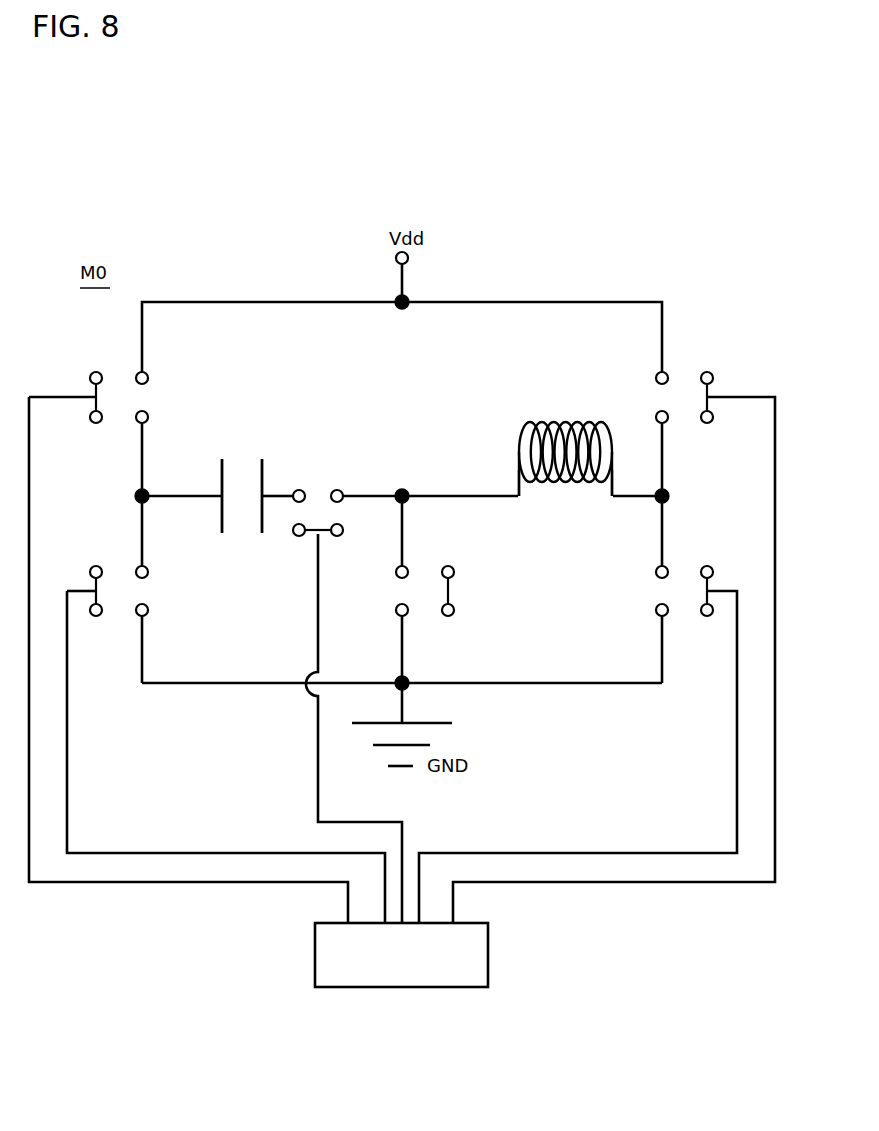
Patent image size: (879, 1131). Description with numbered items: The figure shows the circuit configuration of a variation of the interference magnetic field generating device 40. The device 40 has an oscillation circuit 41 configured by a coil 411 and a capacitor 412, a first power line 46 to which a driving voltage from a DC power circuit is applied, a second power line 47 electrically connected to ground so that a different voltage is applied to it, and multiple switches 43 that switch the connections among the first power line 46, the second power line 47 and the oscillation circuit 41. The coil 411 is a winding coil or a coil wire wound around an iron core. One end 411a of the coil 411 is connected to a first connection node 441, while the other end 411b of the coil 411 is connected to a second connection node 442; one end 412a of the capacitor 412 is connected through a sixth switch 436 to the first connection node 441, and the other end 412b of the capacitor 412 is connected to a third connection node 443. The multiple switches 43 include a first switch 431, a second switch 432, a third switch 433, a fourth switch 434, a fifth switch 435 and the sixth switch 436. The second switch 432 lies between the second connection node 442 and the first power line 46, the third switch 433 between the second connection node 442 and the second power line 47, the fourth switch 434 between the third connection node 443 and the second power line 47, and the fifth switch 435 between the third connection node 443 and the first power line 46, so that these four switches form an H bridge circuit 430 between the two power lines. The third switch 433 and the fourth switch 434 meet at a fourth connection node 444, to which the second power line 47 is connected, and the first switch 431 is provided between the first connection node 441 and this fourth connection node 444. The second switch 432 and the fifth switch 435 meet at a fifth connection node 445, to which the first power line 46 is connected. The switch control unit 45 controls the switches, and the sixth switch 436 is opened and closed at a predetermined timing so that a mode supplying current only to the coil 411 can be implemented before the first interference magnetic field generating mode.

The interference magnetic field generating device 40 is at (727, 250).
The H bridge circuit 430 is at (215, 297).
The first power line 46 is at (404, 283).
The fifth connection node 445 is at (399, 304).
The oscillation circuit 41 is at (472, 394).
The capacitor 412 is at (266, 482).
The one end of the capacitor 412a is at (266, 492).
The other end of the capacitor 412b is at (218, 490).
The coil 411 is at (518, 447).
The one end of the coil 411a is at (518, 500).
The other end of the coil 411b is at (610, 500).
The multiple switches 43 is at (409, 522).
The first switch 431 is at (423, 570).
The second switch 432 is at (685, 378).
The third switch 433 is at (682, 572).
The fourth switch 434 is at (121, 614).
The fifth switch 435 is at (120, 419).
The sixth switch 436 is at (292, 517).
The first connection node 441 is at (397, 504).
The second connection node 442 is at (658, 503).
The third connection node 443 is at (146, 500).
The fourth connection node 444 is at (408, 680).
The second power line 47 is at (403, 705).
The switch control unit 45 is at (458, 990).